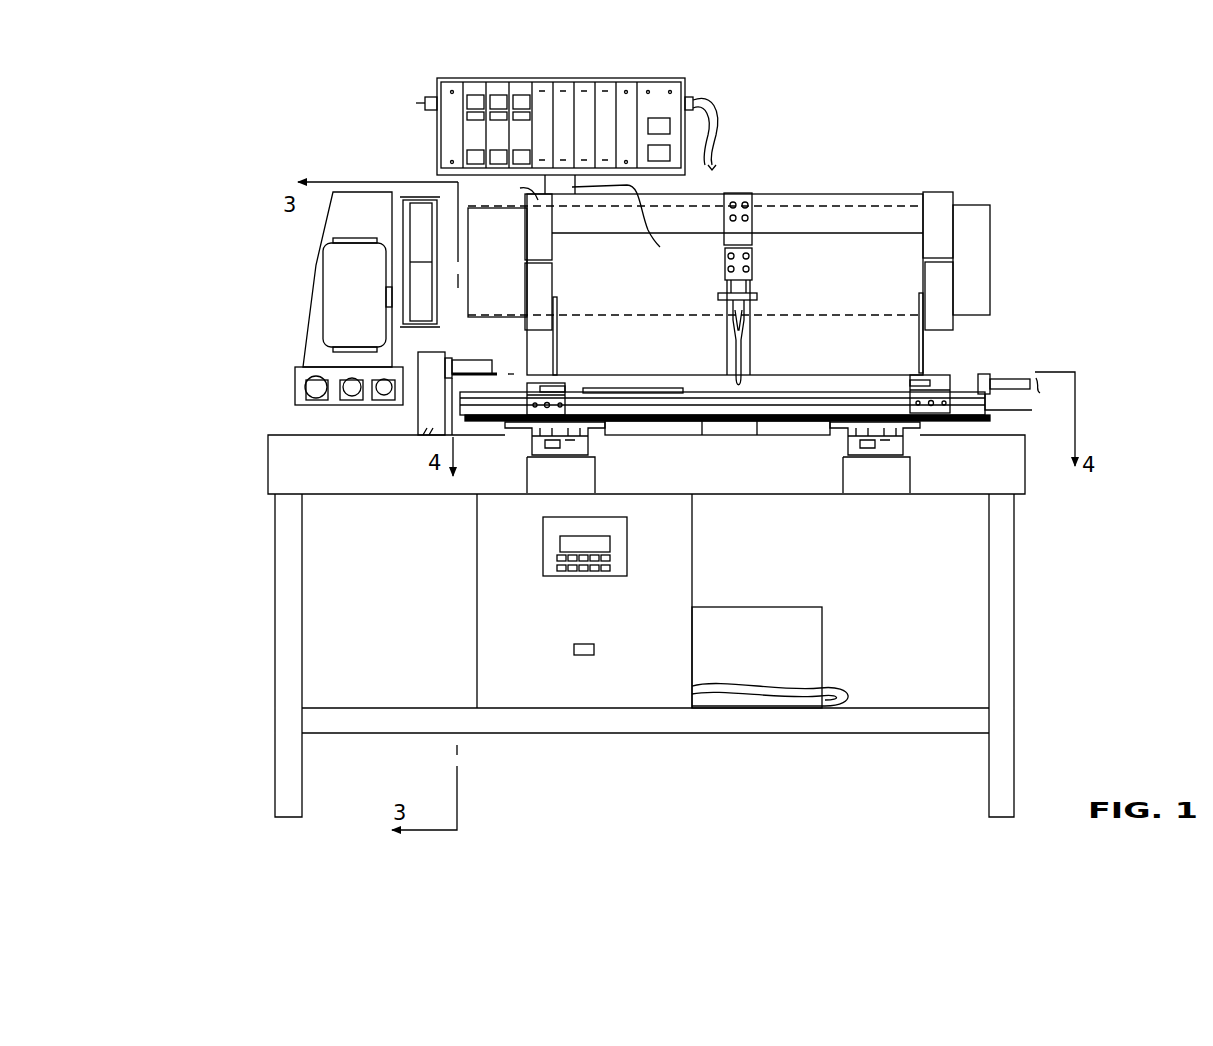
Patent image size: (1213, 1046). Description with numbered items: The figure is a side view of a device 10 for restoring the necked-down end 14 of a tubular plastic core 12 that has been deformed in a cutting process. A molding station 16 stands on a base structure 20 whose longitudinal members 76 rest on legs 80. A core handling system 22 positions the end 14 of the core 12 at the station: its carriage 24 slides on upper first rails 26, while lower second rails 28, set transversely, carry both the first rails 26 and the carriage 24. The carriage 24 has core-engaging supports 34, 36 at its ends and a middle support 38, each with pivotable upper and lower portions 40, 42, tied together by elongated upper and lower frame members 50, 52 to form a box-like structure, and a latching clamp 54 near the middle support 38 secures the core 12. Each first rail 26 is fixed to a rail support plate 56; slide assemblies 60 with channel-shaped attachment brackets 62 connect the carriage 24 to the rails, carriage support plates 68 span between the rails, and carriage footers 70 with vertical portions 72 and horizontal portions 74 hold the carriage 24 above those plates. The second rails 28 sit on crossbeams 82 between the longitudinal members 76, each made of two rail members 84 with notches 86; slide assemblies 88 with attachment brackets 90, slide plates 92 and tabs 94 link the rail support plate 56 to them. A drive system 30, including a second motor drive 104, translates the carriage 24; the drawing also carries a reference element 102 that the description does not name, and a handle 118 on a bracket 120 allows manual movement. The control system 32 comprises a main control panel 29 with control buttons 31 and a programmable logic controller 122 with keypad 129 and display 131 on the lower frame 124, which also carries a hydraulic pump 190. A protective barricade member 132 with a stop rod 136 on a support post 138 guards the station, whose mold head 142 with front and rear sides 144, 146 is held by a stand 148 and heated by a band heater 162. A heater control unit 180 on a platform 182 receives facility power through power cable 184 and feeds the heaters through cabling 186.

The device 10 is at (198, 474).
The tubular plastic core 12 is at (985, 232).
The end of the core 14 is at (497, 262).
The molding station 16 is at (316, 312).
The base structure 20 is at (280, 597).
The core handling system 22 is at (906, 126).
The carriage 24 is at (940, 333).
The first rails 26 is at (788, 406).
The second rails 28 is at (592, 466).
The main control panel 29 is at (300, 380).
The drive system 30 is at (708, 377).
The control buttons 31 is at (352, 397).
The control system 32 is at (522, 598).
The core-engaging support 34 is at (510, 188).
The end core-engaging support 36 is at (945, 192).
The middle core-engaging support 38 is at (740, 195).
The upper portion 40 is at (552, 224).
The lower portion 42 is at (545, 269).
The upper frame member 50 is at (845, 212).
The lower frame member 52 is at (778, 330).
The latching clamp 54 is at (722, 240).
The rail support plate 56 is at (805, 430).
The slide assemblies 60 is at (565, 392).
The attachment brackets 62 is at (568, 405).
The carriage support plates 68 is at (555, 395).
The carriage footers 70 is at (560, 305).
The vertical portions 72 is at (556, 322).
The horizontal portions 74 is at (524, 380).
The longitudinal members 76 is at (320, 490).
The legs 80 is at (283, 695).
The crossbeams 82 is at (543, 472).
The rail members 84 is at (577, 457).
The notches 86 is at (530, 442).
The slide assemblies 88 is at (520, 479).
The attachment bracket 90 is at (520, 426).
The slide plates 92 is at (590, 455).
The tabs 94 is at (595, 440).
The table top 102 is at (725, 430).
The second motor drive 104 is at (665, 390).
The handle 118 is at (1023, 394).
The bracket 120 is at (992, 410).
The programmable logic controller 122 is at (620, 553).
The lower frame 124 is at (920, 735).
The keypad 129 is at (605, 567).
The display 131 is at (598, 540).
The protective barricade member 132 is at (430, 437).
The stop rod 136 is at (470, 364).
The support post 138 is at (436, 436).
The mold head 142 is at (400, 212).
The front side 144 is at (458, 226).
The rear side 146 is at (402, 326).
The stand 148 is at (357, 207).
The band heater 162 is at (415, 297).
The heater control unit 180 is at (603, 100).
The platform 182 is at (631, 224).
The power cable 184 is at (433, 97).
The cabling 186 is at (698, 88).
The hydraulic pump 190 is at (800, 648).